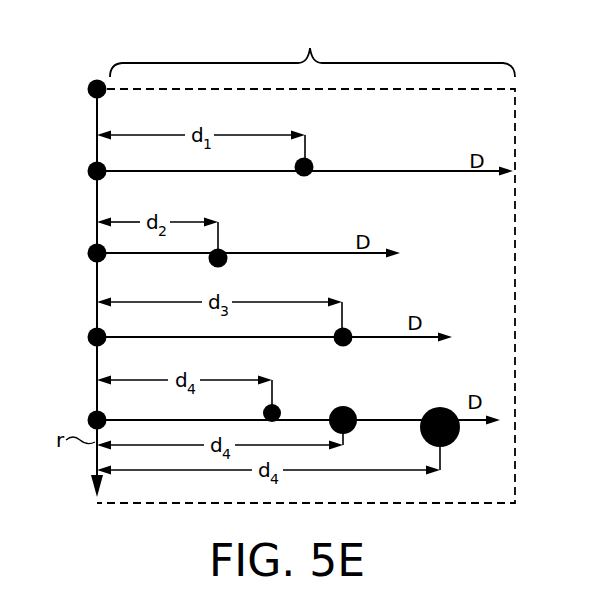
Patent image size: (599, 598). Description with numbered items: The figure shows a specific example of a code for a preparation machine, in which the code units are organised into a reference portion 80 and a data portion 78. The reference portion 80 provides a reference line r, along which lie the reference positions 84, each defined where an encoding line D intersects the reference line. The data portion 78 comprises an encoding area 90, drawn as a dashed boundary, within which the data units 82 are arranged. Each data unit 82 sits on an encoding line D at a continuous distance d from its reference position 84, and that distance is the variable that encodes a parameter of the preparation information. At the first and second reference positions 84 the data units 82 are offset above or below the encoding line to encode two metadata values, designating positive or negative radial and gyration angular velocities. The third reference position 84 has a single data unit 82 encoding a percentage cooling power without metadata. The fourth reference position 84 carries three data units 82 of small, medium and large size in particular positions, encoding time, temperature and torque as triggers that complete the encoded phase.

The data portion 78 is at (312, 50).
The reference portion 80 is at (87, 77).
The data unit 82 is at (312, 163).
The reference position 84 is at (86, 89).
The encoding area 90 is at (515, 127).